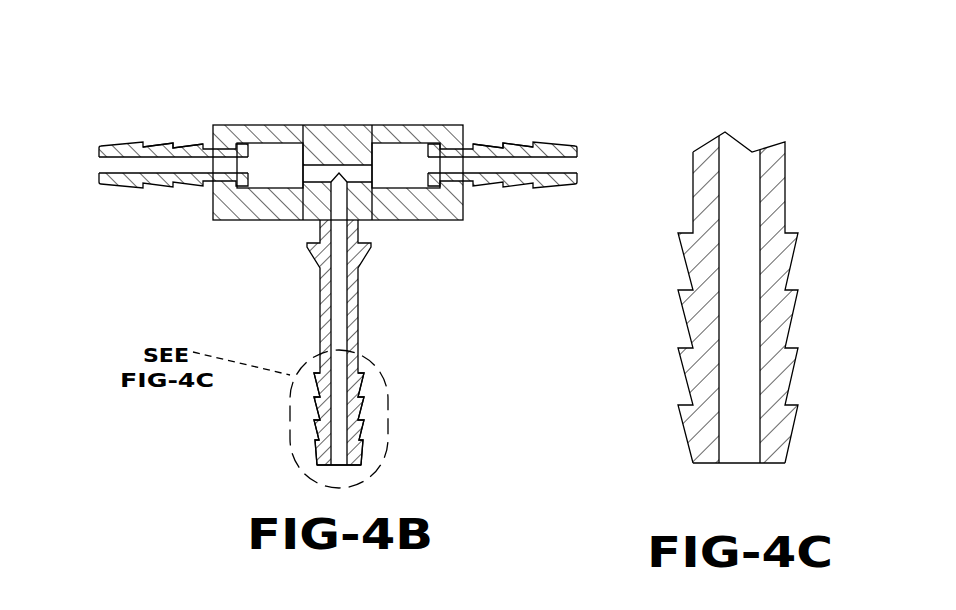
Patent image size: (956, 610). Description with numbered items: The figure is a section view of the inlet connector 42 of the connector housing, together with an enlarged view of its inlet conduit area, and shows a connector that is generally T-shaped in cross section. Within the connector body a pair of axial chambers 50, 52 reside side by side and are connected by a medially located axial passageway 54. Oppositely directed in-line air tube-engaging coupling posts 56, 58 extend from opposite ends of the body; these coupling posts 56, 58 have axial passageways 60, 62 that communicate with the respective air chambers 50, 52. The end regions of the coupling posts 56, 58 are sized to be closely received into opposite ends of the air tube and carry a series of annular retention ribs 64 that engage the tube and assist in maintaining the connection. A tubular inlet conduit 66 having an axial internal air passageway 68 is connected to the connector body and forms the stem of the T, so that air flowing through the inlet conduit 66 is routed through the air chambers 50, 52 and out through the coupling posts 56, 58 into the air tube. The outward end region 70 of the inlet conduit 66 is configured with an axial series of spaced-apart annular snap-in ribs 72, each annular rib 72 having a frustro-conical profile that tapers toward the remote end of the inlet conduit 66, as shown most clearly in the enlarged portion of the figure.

In FIG. 4B, the inlet connector 42 is at (376, 106).
In FIG. 4B, the axial chamber 50 is at (273, 170).
In FIG. 4B, the axial chamber 52 is at (404, 170).
In FIG. 4B, the axial passageway 54 is at (325, 171).
In FIG. 4B, the coupling post 56 is at (565, 128).
In FIG. 4B, the coupling post 58 is at (111, 127).
In FIG. 4B, the axial passageway 60 is at (571, 165).
In FIG. 4B, the axial passageway 62 is at (106, 165).
In FIG. 4B, the annular retention ribs 64 is at (161, 143).
In FIG. 4B, the tubular inlet conduit 66 is at (353, 305).
In FIG. 4B, the axial internal air passageway 68 is at (342, 290).
In FIG. 4C, the axial internal air passageway 68 is at (737, 310).
In FIG. 4B, the outward end region 70 is at (342, 472).
In FIG. 4C, the outward end region 70 is at (724, 471).
In FIG. 4B, the annular snap-in ribs 72 is at (313, 412).
In FIG. 4C, the annular snap-in ribs 72 is at (681, 248).